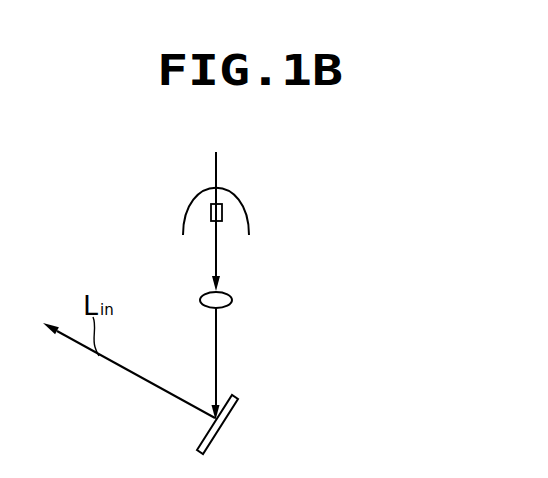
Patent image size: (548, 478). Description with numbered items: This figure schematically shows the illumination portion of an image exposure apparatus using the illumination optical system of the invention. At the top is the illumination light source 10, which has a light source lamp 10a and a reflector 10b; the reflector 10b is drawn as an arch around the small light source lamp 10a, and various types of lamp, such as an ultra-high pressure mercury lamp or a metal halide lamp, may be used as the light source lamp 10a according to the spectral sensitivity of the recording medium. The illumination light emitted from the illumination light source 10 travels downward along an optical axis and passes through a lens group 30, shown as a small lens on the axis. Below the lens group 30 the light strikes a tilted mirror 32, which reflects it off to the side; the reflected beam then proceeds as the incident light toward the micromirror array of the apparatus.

The illumination light source 10 is at (284, 180).
The light source lamp 10a is at (250, 218).
The reflector 10b is at (224, 208).
The lens group 30 is at (232, 298).
The mirror 32 is at (221, 420).